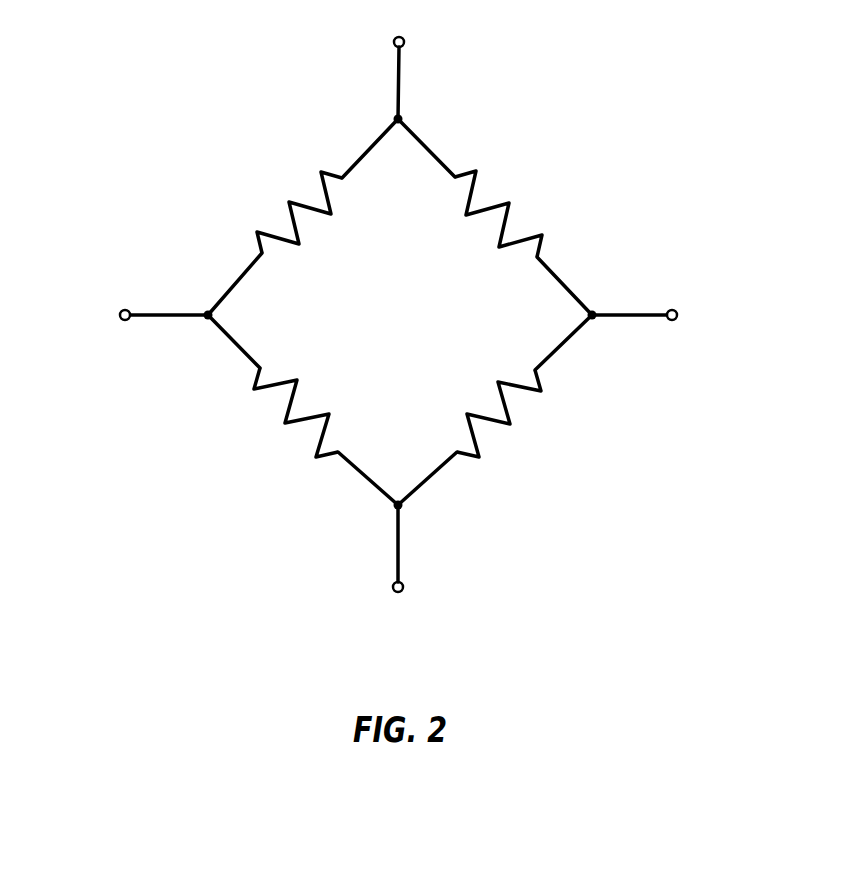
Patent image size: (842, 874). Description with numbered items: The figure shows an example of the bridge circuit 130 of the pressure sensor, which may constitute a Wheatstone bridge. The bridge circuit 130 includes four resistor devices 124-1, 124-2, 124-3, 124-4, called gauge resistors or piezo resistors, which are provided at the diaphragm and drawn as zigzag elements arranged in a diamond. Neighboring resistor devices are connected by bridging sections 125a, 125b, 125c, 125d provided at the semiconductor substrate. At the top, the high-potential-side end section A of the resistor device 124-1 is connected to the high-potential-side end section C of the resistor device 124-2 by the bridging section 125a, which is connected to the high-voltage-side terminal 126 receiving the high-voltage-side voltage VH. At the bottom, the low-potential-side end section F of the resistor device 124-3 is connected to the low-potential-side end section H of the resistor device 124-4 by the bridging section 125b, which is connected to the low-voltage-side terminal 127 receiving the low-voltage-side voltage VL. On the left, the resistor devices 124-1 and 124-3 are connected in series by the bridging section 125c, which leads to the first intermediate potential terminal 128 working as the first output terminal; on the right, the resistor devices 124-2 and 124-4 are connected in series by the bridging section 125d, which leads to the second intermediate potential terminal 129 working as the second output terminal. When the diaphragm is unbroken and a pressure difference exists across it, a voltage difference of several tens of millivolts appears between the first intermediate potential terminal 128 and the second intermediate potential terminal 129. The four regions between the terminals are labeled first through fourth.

The resistor device 124-1 is at (320, 172).
The resistor device 124-2 is at (480, 170).
The resistor device 124-3 is at (322, 455).
The resistor device 124-4 is at (475, 455).
The bridging section 125a is at (418, 137).
The bridging section 125b is at (415, 492).
The bridging section 125c is at (223, 338).
The bridging section 125d is at (575, 292).
The high-voltage-side terminal 126 is at (408, 42).
The low-voltage-side terminal 127 is at (405, 588).
The first intermediate potential terminal 128 is at (122, 307).
The second intermediate potential terminal 129 is at (675, 308).
The bridge circuit 130 is at (396, 317).